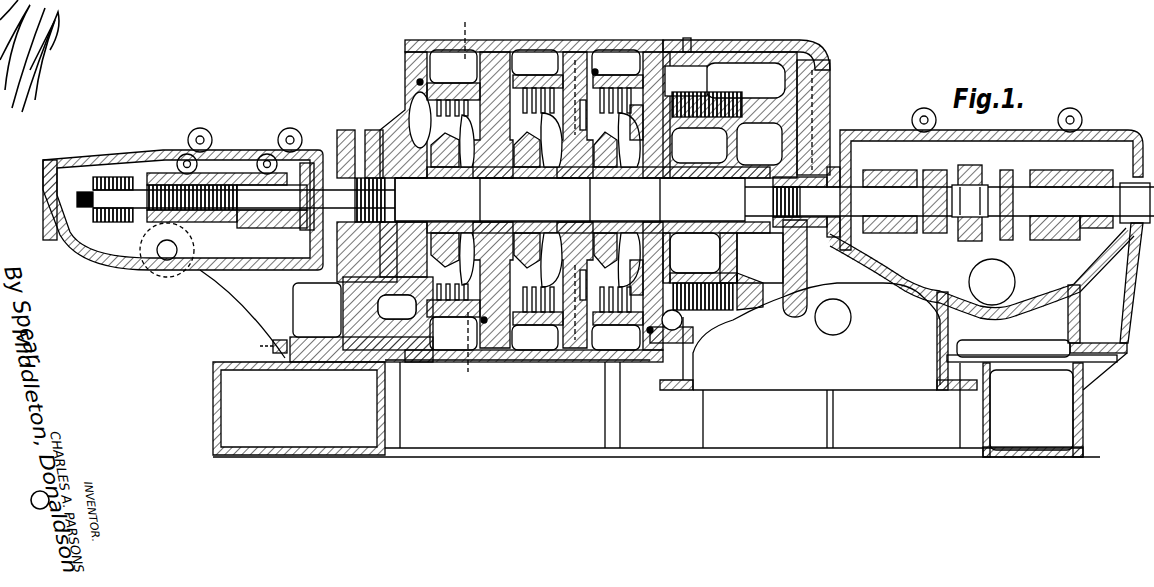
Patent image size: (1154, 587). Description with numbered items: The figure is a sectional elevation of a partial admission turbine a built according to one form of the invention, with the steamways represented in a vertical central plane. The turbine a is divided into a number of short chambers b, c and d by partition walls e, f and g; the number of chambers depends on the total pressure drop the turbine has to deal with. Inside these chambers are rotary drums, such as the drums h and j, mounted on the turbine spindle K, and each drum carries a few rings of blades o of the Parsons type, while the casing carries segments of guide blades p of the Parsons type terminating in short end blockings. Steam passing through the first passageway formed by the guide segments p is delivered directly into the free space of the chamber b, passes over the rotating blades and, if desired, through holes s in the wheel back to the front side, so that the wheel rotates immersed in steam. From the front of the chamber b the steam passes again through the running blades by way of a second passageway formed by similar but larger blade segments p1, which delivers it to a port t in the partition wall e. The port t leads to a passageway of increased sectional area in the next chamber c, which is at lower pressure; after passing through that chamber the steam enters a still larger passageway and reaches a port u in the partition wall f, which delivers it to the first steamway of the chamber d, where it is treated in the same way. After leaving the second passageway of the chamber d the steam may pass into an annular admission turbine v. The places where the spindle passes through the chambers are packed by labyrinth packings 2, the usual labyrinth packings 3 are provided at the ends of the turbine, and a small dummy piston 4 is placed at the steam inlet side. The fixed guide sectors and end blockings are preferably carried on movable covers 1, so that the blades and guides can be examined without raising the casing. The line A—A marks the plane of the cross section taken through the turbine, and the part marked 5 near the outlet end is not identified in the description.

The movable covers 1 is at (617, 207).
The labyrinth packings 2 is at (598, 200).
The labyrinth packings 3 is at (367, 206).
The dummy piston 4 is at (411, 200).
The gland 5 is at (832, 165).
The section line A— A is at (463, 207).
The turbine a is at (346, 319).
The chamber b is at (412, 105).
The chamber c is at (538, 200).
The chamber d is at (618, 200).
The partition wall e is at (545, 203).
The partition wall f is at (573, 203).
The partition wall g is at (660, 110).
The rotary drum h is at (452, 200).
The rotary drum j is at (668, 160).
The turbine spindle K is at (732, 178).
The rings of blades o is at (470, 88).
The segments of guide blades p is at (535, 215).
The larger blade segments p1 is at (418, 82).
The holes s is at (388, 112).
The port t is at (493, 185).
The port u is at (585, 241).
The annular admission turbine v is at (740, 105).